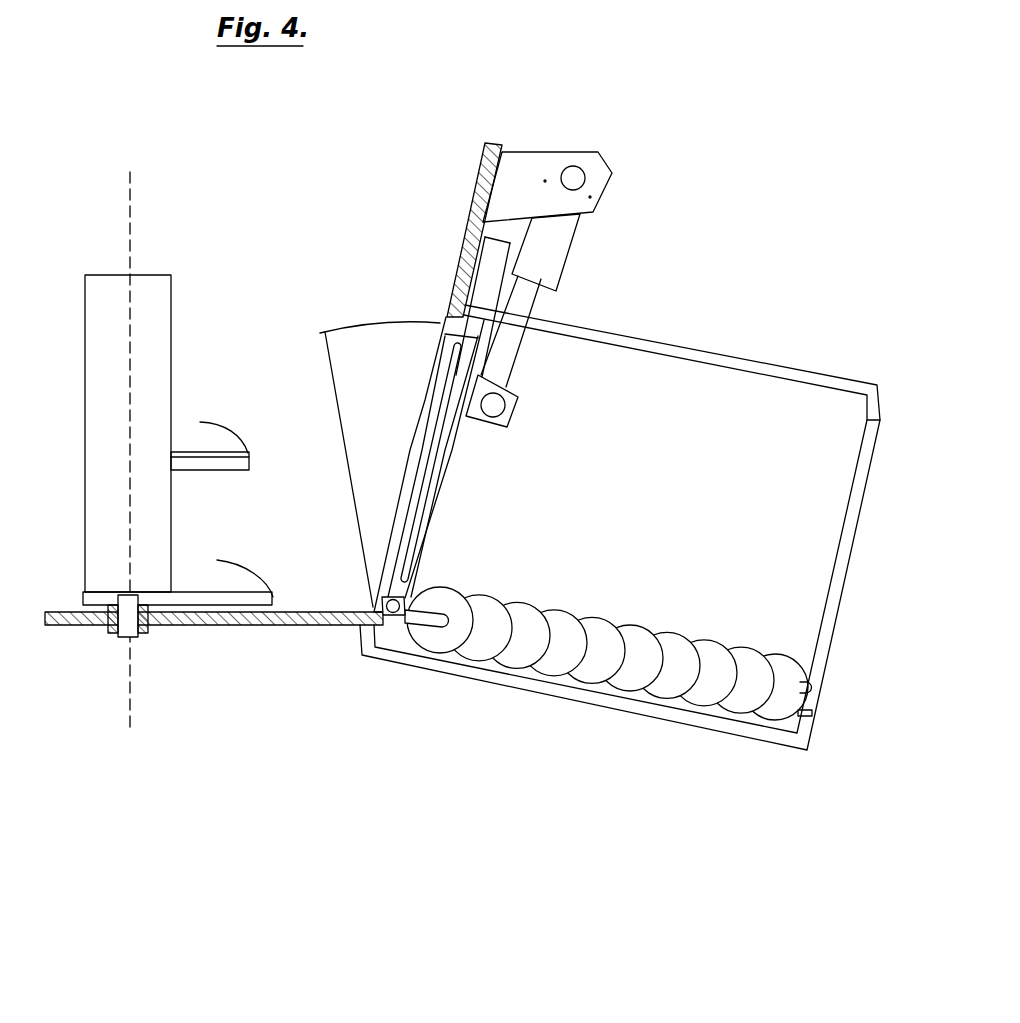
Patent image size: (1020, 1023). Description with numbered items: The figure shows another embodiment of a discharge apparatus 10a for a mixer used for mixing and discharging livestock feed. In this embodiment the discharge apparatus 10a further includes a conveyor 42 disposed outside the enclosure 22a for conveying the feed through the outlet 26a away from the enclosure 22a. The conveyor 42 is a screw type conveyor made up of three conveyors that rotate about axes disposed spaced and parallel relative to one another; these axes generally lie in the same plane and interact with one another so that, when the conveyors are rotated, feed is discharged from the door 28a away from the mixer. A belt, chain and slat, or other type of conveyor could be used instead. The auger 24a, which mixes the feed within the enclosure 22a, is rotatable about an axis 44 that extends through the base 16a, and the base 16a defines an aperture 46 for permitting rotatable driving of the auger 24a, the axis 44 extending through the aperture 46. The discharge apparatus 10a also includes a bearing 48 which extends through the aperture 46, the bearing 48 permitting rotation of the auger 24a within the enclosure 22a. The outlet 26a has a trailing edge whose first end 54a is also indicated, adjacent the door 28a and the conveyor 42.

The discharge apparatus 10a is at (622, 290).
The base 16a is at (318, 630).
The enclosure 22a is at (275, 386).
The auger 24a is at (153, 383).
The outlet 26a is at (418, 437).
The door 28a is at (483, 302).
The conveyor 42 is at (582, 706).
The axis 44 is at (128, 265).
The aperture 46 is at (110, 626).
The bearing 48 is at (142, 636).
The first end 54a is at (385, 590).